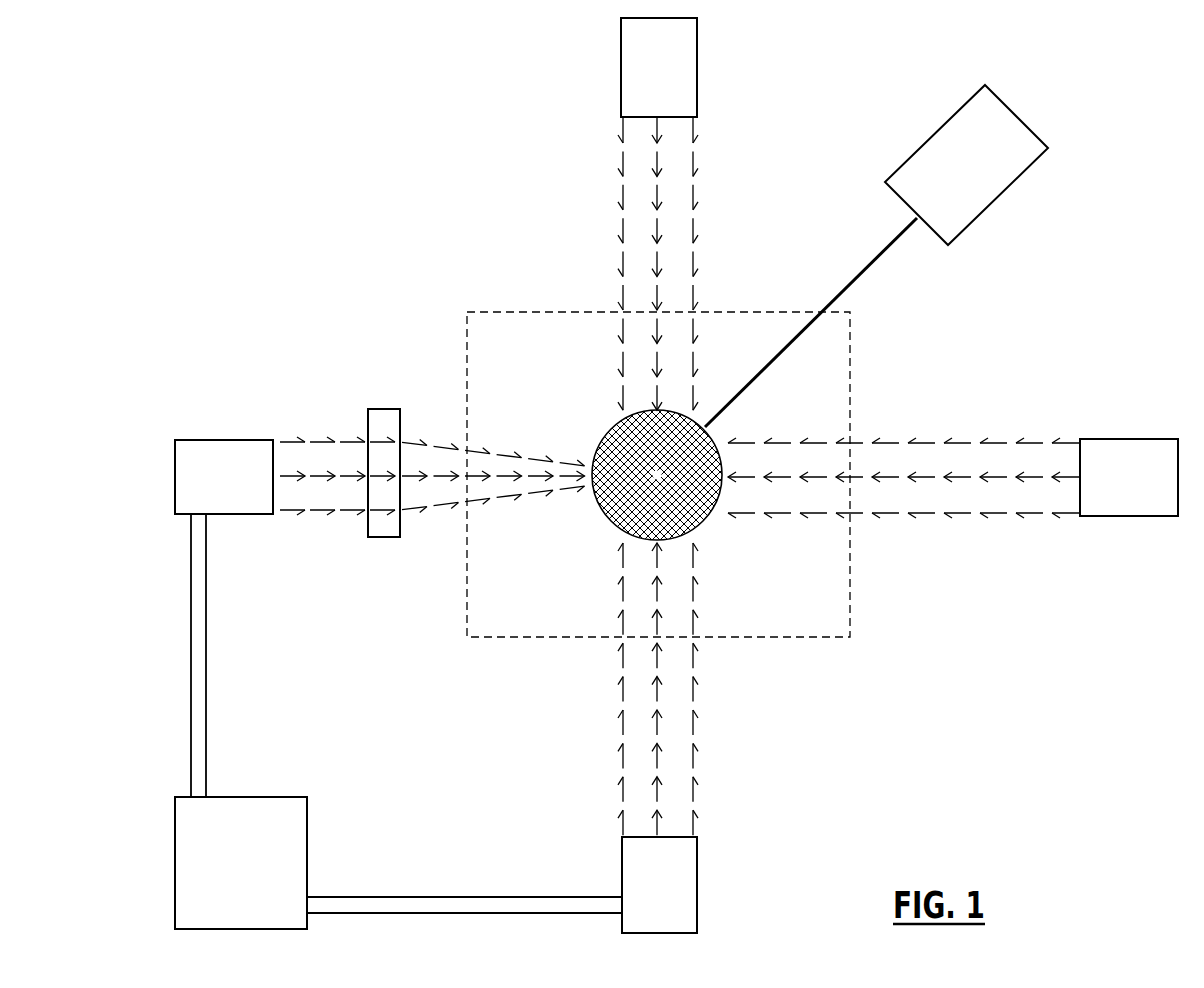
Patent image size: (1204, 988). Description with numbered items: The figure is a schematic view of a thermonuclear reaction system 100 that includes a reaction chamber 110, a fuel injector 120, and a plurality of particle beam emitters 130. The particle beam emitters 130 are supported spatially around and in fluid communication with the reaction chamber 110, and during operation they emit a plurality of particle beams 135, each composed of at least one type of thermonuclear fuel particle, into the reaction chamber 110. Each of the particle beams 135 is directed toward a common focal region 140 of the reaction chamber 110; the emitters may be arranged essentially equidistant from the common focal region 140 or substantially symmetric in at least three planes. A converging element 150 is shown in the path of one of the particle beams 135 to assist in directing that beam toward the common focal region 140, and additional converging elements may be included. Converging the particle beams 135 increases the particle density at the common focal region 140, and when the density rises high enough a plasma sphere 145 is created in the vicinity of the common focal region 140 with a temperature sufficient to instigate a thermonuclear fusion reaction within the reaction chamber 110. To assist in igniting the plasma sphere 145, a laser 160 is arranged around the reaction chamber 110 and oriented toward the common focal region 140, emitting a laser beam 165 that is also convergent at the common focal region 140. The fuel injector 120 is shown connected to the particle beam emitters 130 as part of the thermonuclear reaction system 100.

The thermonuclear reaction system 100 is at (330, 125).
The reaction chamber 110 is at (786, 630).
The fuel injector 120 is at (213, 885).
The particle beam emitters 130 is at (635, 77).
The particle beams 135 is at (700, 272).
The common focal region 140 is at (708, 518).
The plasma sphere 145 is at (595, 512).
The converging elements 150 is at (380, 538).
The lasers 160 is at (946, 175).
The laser beams 165 is at (863, 278).